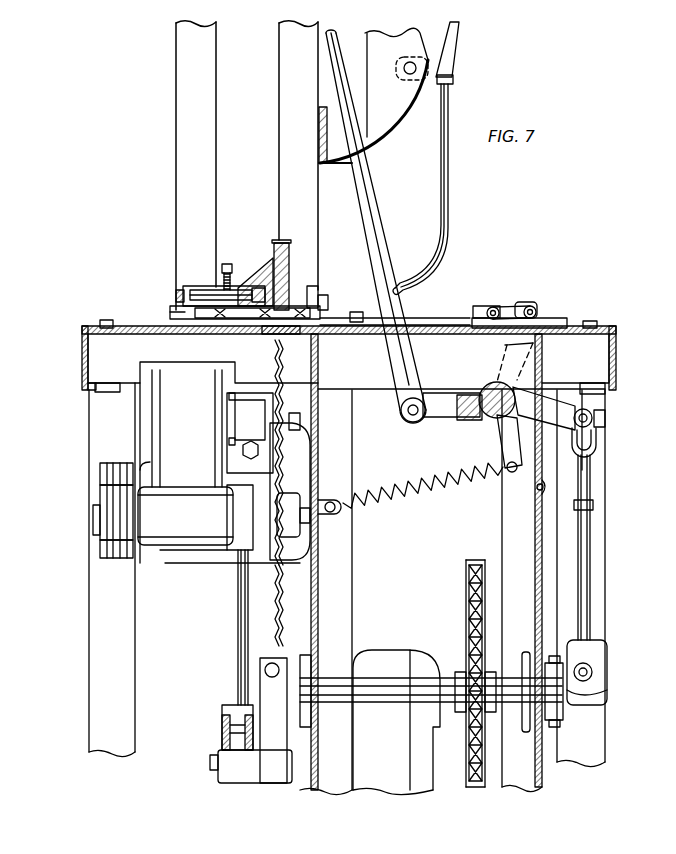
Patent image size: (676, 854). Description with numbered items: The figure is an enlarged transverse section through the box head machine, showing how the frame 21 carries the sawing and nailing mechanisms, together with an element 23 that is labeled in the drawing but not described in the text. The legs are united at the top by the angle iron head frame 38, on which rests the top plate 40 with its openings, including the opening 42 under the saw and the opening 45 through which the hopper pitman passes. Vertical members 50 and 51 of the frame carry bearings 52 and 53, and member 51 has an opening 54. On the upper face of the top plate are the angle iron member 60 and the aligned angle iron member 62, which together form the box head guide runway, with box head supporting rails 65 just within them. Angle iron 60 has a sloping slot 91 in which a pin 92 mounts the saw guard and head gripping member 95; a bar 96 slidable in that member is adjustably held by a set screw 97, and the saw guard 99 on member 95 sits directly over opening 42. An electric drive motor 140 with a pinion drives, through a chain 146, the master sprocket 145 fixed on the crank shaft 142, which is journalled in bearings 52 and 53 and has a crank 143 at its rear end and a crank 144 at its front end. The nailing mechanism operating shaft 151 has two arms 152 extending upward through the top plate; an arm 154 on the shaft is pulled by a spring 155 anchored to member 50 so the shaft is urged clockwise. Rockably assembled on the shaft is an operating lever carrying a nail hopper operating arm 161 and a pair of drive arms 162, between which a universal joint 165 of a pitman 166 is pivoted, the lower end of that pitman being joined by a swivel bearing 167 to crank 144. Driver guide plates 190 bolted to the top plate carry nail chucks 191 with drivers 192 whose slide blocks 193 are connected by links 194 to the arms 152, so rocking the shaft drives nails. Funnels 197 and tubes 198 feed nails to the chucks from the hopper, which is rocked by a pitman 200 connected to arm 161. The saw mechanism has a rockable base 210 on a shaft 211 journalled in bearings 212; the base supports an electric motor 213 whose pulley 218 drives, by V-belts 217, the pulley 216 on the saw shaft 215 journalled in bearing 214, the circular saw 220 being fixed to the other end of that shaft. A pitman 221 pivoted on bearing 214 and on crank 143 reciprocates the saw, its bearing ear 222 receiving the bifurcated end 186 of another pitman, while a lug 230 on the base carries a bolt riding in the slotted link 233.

The frame 21 is at (82, 597).
The sprocket wheel 23 is at (300, 421).
The head frame 38 is at (82, 362).
The top plate 40 is at (567, 328).
The opening 42 is at (283, 334).
The opening 45 is at (413, 330).
The vertical member 50 is at (334, 588).
The vertical member 51 is at (533, 527).
The bearing 52 is at (308, 662).
The bearing 53 is at (527, 657).
The opening 54 is at (538, 492).
The angle iron member 60 is at (182, 307).
The angle iron member 62 is at (322, 308).
The box head supporting rails 65 is at (193, 333).
The sloping slot 91 is at (177, 294).
The pin 92 is at (317, 297).
The saw guard and head gripping member 95 is at (260, 272).
The bar 96 is at (198, 299).
The set screw 97 is at (227, 266).
The saw guard 99 is at (291, 254).
The electric drive motor 140 is at (384, 660).
The crank shaft 142 is at (388, 696).
The crank 143 is at (268, 695).
The crank 144 is at (554, 697).
The master sprocket 145 is at (467, 620).
The chain 146 is at (467, 577).
The nailing mechanism operating shaft 151 is at (486, 423).
The arms 152 is at (495, 378).
The arm 154 is at (505, 465).
The spring 155 is at (417, 481).
The nail hopper operating arm 161 is at (449, 411).
The drive arms 162 is at (592, 427).
The universal joint 165 is at (605, 413).
The pitman 166 is at (587, 525).
The swivel bearing 167 is at (598, 682).
The bifurcated end 186 is at (223, 722).
The driver guide plates 190 is at (555, 326).
The nail chucks 191 is at (318, 313).
The drivers 192 is at (452, 316).
The slide blocks 193 is at (478, 312).
The links 194 is at (518, 305).
The funnels 197 is at (444, 51).
The tubes 198 is at (448, 196).
The pitman 200 is at (372, 212).
The rockable base 210 is at (163, 422).
The shaft 211 is at (130, 386).
The bearings 212 is at (100, 387).
The electric motor 213 is at (194, 558).
The bearing 214 is at (170, 541).
The saw shaft 215 is at (93, 517).
The pulley 216 is at (100, 538).
The V-belts 217 is at (110, 555).
The pulley 218 is at (100, 475).
The circular saw 220 is at (286, 568).
The pitman 221 is at (237, 627).
The bearing ear 222 is at (233, 733).
The lug 230 is at (230, 432).
The link 233 is at (278, 375).